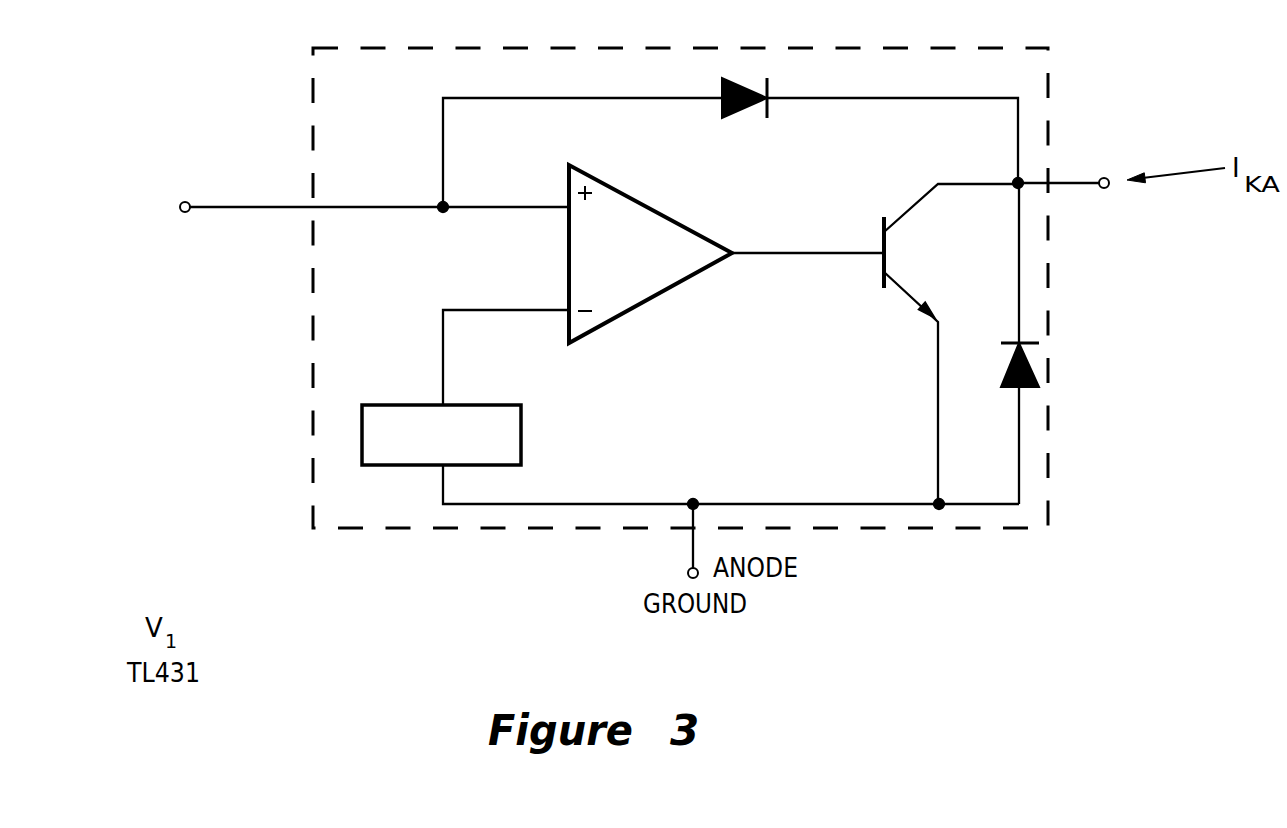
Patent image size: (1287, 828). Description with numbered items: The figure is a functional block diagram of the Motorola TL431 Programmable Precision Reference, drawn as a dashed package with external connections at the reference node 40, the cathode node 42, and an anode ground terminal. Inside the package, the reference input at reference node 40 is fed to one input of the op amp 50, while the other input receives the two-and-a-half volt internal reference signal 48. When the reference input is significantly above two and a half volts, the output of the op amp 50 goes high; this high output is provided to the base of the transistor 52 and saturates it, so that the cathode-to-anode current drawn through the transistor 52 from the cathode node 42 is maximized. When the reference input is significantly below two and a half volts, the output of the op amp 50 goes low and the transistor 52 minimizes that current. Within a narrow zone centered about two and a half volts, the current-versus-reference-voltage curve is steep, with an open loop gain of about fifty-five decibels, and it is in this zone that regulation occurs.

The reference node 40 is at (338, 213).
The cathode node 42 is at (1102, 176).
The 2.5 volt internal reference signal 48 is at (398, 403).
The op amp 50 is at (625, 312).
The transistor 52 is at (884, 262).